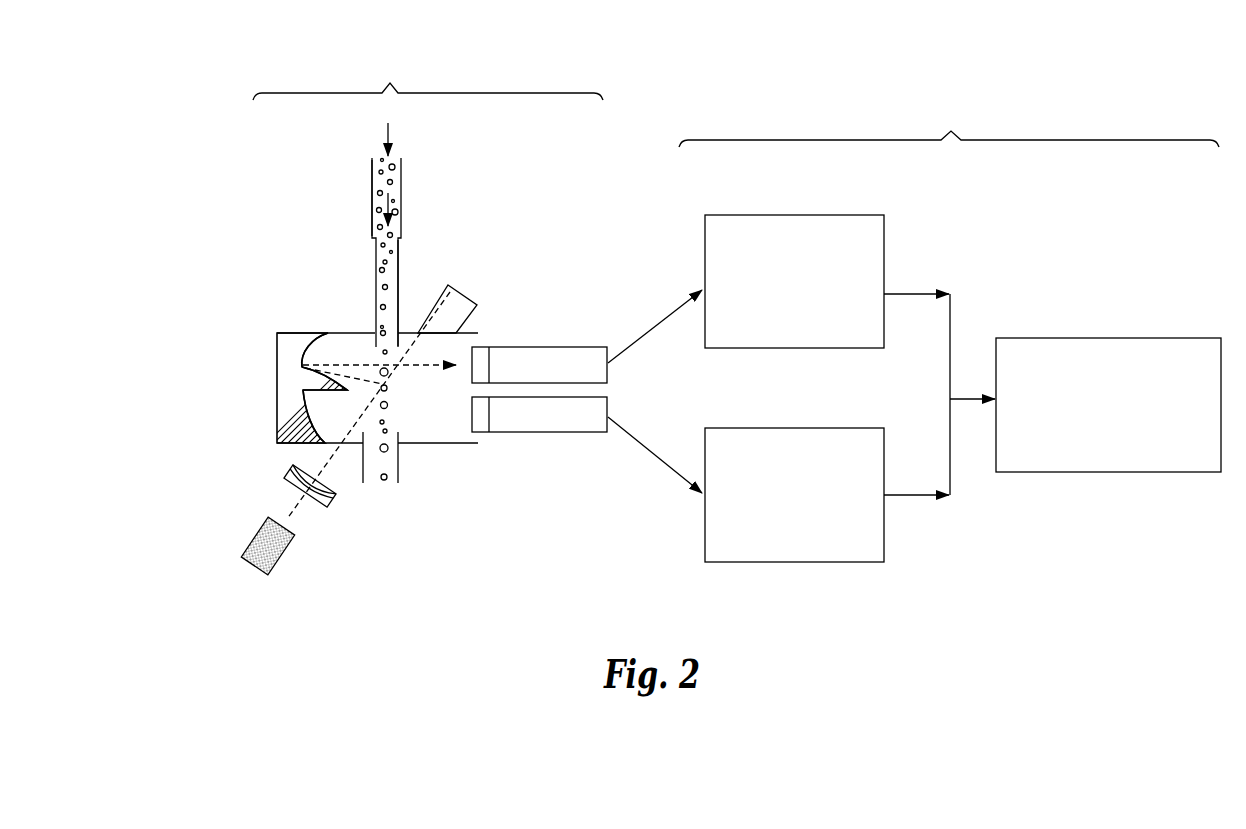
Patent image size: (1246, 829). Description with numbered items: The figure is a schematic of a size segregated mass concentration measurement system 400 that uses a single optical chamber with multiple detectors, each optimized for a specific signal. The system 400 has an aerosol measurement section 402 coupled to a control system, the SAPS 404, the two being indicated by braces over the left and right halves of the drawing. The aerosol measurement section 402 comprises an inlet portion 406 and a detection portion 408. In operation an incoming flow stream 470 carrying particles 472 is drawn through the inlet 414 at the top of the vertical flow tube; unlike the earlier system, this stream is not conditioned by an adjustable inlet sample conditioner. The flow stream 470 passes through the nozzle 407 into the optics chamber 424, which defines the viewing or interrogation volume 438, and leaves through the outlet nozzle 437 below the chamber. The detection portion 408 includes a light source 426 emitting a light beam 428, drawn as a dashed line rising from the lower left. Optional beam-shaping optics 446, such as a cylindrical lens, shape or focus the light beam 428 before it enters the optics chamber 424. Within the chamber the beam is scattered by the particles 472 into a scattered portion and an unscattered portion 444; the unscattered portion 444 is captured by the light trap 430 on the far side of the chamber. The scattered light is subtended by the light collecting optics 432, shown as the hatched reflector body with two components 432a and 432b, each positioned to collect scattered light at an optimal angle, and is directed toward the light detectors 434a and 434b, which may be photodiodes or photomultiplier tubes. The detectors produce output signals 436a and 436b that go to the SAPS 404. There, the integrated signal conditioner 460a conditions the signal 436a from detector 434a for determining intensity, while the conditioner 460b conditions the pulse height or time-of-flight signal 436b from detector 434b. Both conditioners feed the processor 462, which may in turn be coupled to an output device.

The size segregated mass concentration measurement system 400 is at (662, 108).
The aerosol measurement section 402 is at (428, 80).
The SAPS 404 is at (949, 124).
The inlet portion 406 is at (237, 225).
The nozzle tip 407 is at (400, 332).
The detection portion 408 is at (173, 382).
The inlet 414 is at (399, 156).
The optics chamber 424 is at (315, 332).
The light source 426 is at (255, 533).
The light beam 428 is at (327, 467).
The light trap 430 is at (445, 289).
The light collecting optics 432 is at (275, 363).
The collection optics component 432a is at (290, 332).
The collection optics component 432b is at (277, 430).
The light detector 434a is at (577, 347).
The light detector 434b is at (575, 433).
The light detector output signal 436a is at (645, 334).
The light detector output signal 436b is at (648, 449).
The outlet nozzle 437 is at (400, 478).
The viewing or interrogation volume 438 is at (392, 396).
The unscattered portion 444 is at (357, 365).
The beam-shaping optics 446 is at (288, 468).
The signal conditioner 460a is at (774, 328).
The signal conditioner 460b is at (774, 545).
The processor 462 is at (1090, 444).
The incoming flow stream 470 is at (373, 203).
The particles 472 is at (373, 170).